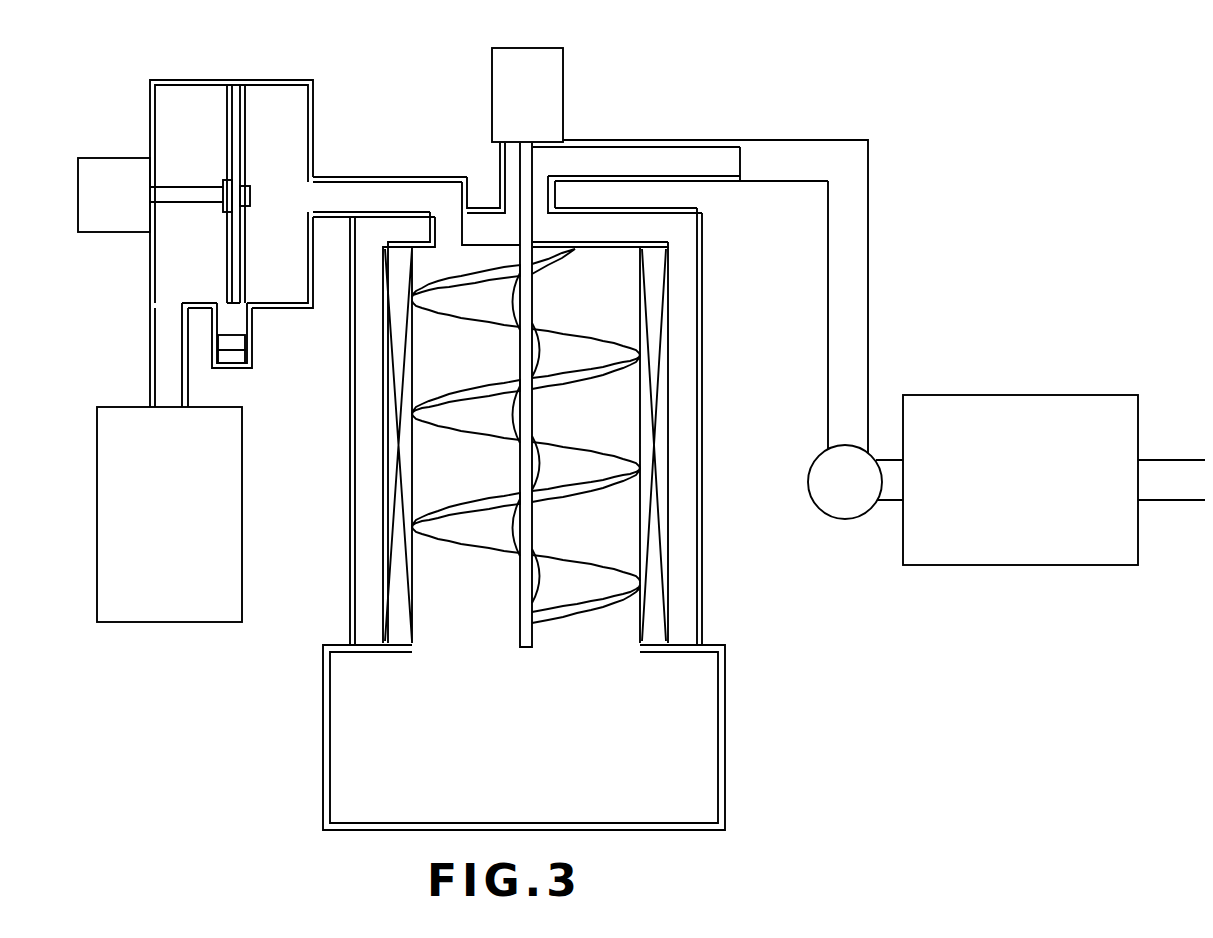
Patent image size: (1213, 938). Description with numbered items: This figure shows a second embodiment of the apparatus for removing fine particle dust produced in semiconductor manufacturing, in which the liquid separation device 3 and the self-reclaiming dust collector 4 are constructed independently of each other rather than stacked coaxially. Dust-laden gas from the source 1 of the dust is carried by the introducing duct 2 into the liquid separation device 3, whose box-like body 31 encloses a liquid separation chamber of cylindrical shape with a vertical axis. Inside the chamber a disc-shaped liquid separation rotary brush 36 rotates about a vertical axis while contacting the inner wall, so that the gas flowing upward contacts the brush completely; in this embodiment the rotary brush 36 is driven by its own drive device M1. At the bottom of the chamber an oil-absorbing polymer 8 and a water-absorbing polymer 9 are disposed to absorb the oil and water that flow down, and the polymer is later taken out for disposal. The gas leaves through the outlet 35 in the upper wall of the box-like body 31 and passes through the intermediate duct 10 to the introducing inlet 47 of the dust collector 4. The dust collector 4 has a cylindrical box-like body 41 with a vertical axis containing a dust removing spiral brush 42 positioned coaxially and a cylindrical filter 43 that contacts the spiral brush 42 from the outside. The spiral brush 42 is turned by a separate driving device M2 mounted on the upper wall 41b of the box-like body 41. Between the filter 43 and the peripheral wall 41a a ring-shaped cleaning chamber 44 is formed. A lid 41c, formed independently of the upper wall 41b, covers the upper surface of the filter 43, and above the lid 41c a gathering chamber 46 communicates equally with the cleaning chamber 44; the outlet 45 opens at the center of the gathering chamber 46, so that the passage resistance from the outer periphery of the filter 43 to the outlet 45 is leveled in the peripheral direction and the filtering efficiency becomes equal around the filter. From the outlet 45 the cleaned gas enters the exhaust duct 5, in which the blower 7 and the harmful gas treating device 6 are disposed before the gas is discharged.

The source of the dust 1 is at (163, 624).
The introducing duct 2 is at (148, 362).
The liquid separation device 3 is at (150, 79).
The box-like body 31 is at (273, 79).
The outlet 35 is at (306, 198).
The liquid separation rotary brush 36 is at (227, 112).
The drive device M1 is at (113, 157).
The driving device M2 is at (556, 42).
The oil-absorbing polymer 8 is at (246, 345).
The water-absorbing polymer 9 is at (237, 357).
The intermediate duct 10 is at (413, 177).
The self-reclaiming dust collector 4 is at (727, 767).
The box-like body 41 is at (703, 509).
The peripheral wall 41a is at (701, 577).
The upper wall 41b is at (648, 208).
The lid 41c is at (583, 248).
The dust removing spiral brush 42 is at (632, 448).
The cylindrical filter 43 is at (670, 398).
The cleaning chamber 44 is at (688, 303).
The outlet 45 is at (560, 196).
The gathering chamber 46 is at (650, 231).
The introducing inlet 47 is at (445, 243).
The exhaust duct 5 is at (868, 200).
The harmful gas treating device 6 is at (1023, 566).
The blower 7 is at (828, 508).